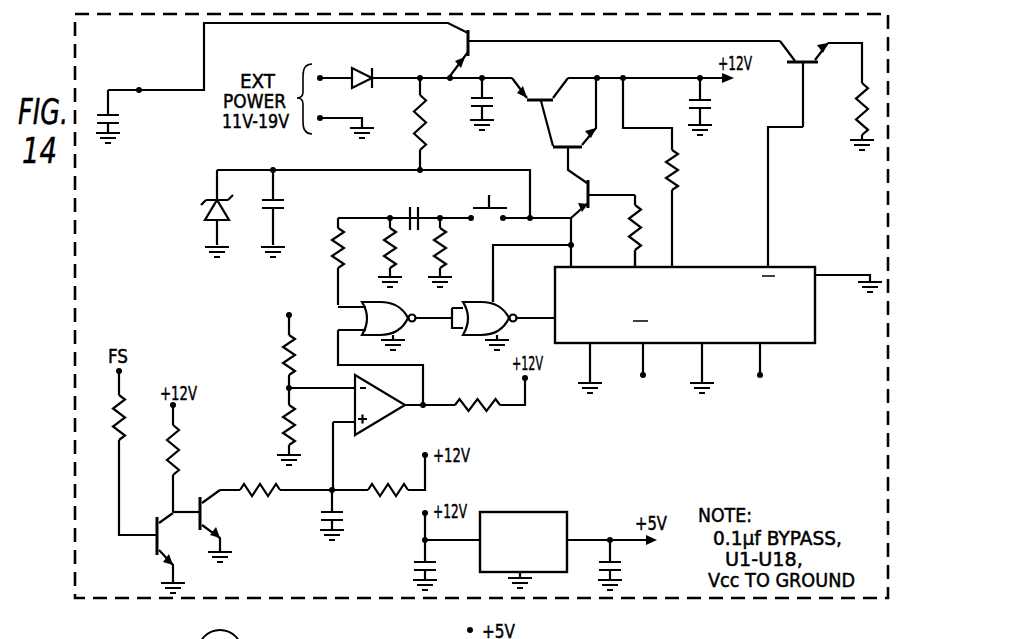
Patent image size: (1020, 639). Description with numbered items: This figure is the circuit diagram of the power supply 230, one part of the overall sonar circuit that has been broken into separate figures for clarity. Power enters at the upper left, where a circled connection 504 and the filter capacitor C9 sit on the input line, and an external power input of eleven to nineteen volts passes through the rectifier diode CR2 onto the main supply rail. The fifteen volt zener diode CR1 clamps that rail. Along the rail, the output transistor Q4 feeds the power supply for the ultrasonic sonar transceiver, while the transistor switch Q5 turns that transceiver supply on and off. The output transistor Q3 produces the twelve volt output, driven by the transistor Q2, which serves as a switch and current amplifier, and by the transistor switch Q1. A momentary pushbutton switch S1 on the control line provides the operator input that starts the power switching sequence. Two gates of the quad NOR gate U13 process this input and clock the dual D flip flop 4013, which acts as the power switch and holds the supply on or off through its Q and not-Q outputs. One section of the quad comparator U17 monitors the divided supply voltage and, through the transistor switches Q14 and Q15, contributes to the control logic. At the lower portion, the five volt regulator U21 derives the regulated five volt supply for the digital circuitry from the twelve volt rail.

The power input node 504 is at (139, 90).
The power supply 230 is at (893, 184).
The dual D flip flop 4013 is at (708, 325).
The quad NOR gate U13 is at (446, 315).
The quad comparator U17 is at (372, 404).
The 5 volt regulator U21 is at (541, 550).
The transistor switch Q1 is at (604, 196).
The transistor switch, current amp Q2 is at (601, 130).
The output transistor for 12 volt power supply Q3 is at (556, 100).
The output transistor for LM1812 power supply Q4 is at (484, 50).
The transistor switch for LM1812 power supply Q5 is at (806, 72).
The transistor switch Q14 is at (185, 553).
The transistor switch Q15 is at (241, 526).
The switch S1 is at (489, 204).
The 15 volt zener diode CR1 is at (199, 213).
The rectifier diode CR2 is at (360, 56).
The capacitor C9 is at (126, 116).